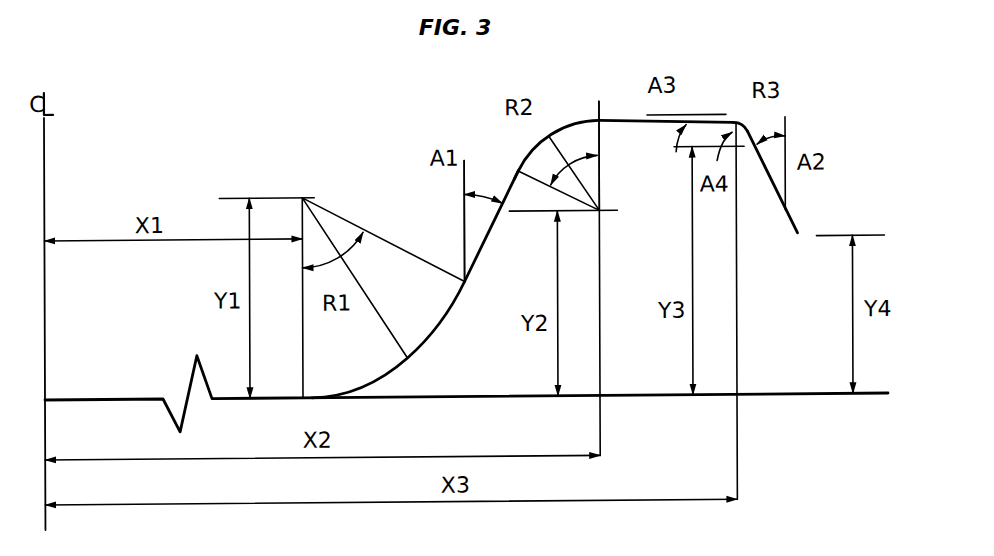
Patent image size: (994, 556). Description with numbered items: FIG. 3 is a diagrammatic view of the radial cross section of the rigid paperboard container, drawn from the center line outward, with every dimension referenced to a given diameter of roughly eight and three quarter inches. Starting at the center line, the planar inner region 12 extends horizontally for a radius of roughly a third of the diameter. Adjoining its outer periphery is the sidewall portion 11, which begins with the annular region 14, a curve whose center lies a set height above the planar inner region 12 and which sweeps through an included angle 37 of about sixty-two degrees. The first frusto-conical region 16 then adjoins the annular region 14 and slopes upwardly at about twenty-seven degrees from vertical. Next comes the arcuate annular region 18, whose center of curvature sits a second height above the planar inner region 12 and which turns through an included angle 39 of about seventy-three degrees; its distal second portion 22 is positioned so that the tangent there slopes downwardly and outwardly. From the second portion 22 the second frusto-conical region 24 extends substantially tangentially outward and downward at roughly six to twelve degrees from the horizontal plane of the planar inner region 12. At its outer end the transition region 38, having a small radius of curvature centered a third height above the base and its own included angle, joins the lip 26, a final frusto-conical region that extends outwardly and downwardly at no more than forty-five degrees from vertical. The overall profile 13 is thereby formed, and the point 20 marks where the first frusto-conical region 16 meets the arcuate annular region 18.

The sidewall portion 11 is at (441, 230).
The planar inner region 12 is at (97, 400).
The profile 13 is at (567, 209).
The annular region 14 is at (428, 346).
The first frusto-conical region 16 is at (486, 244).
The arcuate annular region 18 is at (562, 124).
The tangent point 20 is at (518, 172).
The second portion 22 is at (603, 122).
The second frusto-conical region 24 is at (663, 132).
The lip 26 is at (770, 186).
The included angle 37 is at (337, 236).
The transition region 38 is at (747, 141).
The included angle 39 is at (588, 182).